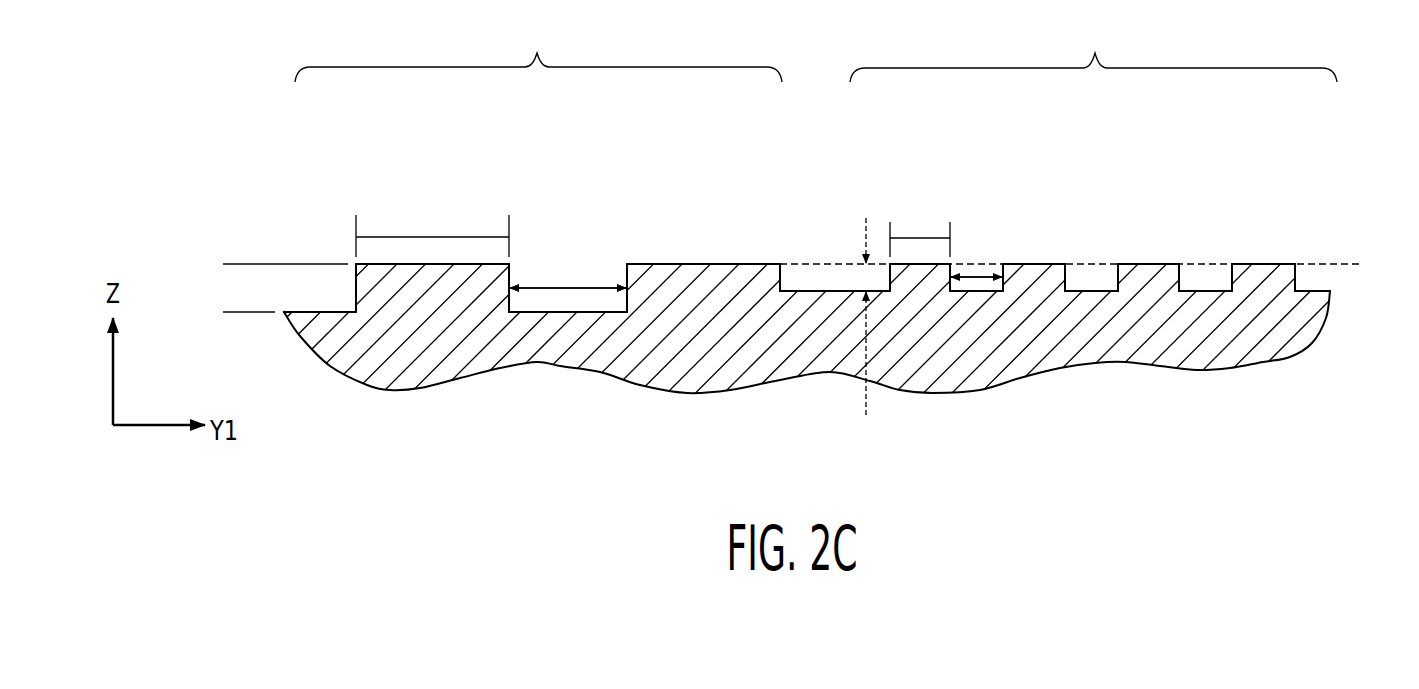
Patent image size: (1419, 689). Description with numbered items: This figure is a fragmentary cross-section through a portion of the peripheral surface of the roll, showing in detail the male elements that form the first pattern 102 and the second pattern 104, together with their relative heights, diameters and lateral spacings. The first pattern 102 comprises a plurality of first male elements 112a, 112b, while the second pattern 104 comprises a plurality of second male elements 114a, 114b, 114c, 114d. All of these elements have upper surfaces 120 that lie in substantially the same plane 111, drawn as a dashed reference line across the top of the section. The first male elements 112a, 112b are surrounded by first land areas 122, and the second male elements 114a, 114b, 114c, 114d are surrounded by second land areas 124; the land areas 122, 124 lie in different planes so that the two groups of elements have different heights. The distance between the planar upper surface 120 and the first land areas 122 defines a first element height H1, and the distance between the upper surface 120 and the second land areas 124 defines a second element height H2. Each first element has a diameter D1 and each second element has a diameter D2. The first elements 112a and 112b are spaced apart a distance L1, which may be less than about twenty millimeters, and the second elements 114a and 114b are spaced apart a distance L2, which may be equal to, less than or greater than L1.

The first pattern 102 is at (538, 50).
The second pattern 104 is at (1093, 50).
The plane 111 is at (1328, 264).
The first male element 112a is at (462, 194).
The first male element 112b is at (708, 262).
The second male element 114a is at (923, 193).
The second male element 114b is at (1035, 243).
The second male element 114c is at (1147, 247).
The second male element 114d is at (1262, 237).
The upper surface 120 is at (409, 265).
The first land area 122 is at (578, 313).
The second land area 124 is at (1093, 292).
The first element height H1 is at (269, 360).
The diameter of first male element D1 is at (432, 230).
The lateral spacing of first elements L1 is at (570, 286).
The second element height H2 is at (867, 299).
The diameter of second male element D2 is at (920, 231).
The lateral spacing of second elements L2 is at (972, 280).